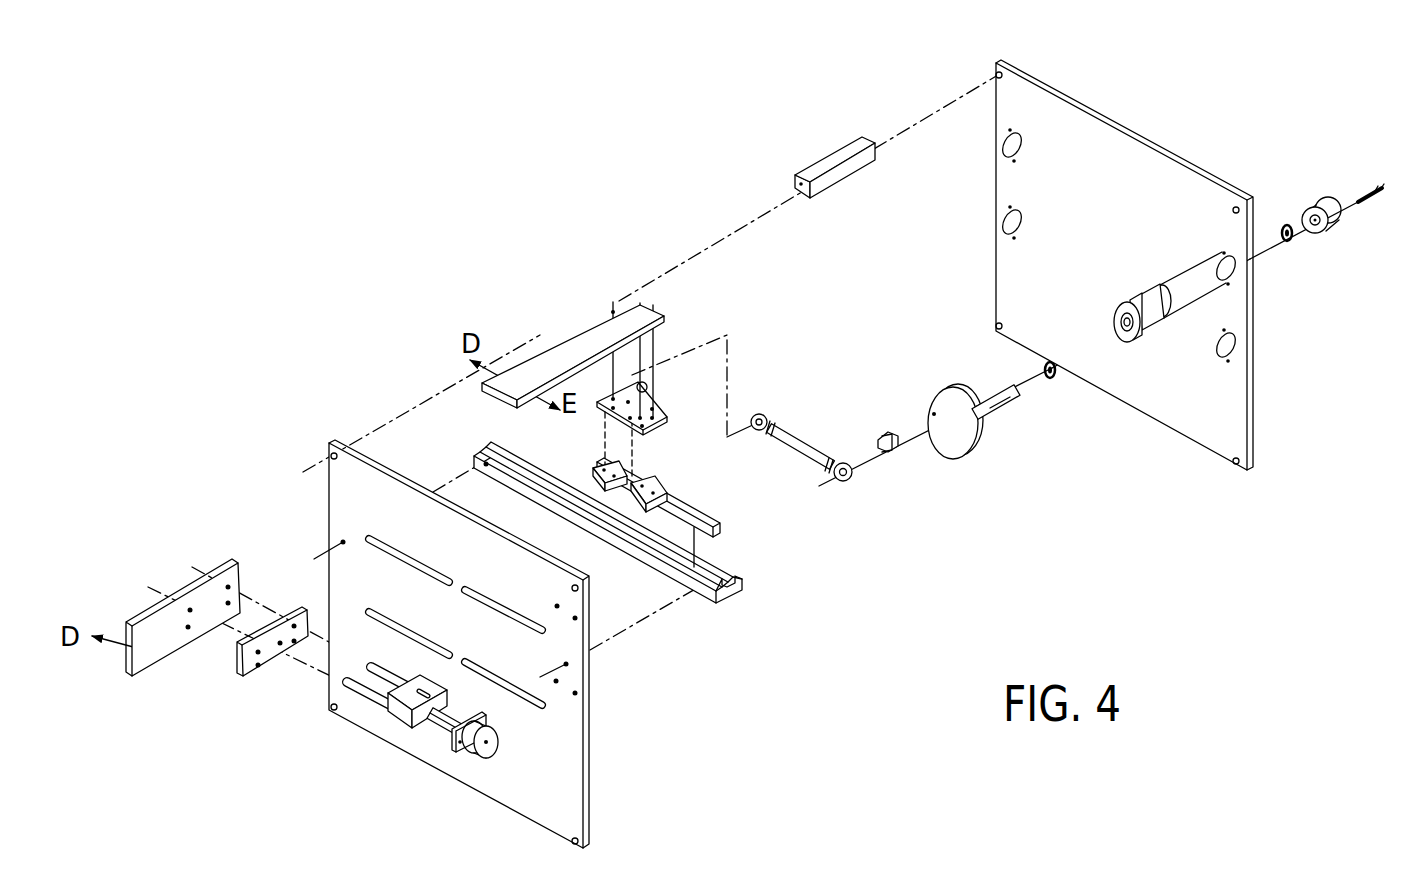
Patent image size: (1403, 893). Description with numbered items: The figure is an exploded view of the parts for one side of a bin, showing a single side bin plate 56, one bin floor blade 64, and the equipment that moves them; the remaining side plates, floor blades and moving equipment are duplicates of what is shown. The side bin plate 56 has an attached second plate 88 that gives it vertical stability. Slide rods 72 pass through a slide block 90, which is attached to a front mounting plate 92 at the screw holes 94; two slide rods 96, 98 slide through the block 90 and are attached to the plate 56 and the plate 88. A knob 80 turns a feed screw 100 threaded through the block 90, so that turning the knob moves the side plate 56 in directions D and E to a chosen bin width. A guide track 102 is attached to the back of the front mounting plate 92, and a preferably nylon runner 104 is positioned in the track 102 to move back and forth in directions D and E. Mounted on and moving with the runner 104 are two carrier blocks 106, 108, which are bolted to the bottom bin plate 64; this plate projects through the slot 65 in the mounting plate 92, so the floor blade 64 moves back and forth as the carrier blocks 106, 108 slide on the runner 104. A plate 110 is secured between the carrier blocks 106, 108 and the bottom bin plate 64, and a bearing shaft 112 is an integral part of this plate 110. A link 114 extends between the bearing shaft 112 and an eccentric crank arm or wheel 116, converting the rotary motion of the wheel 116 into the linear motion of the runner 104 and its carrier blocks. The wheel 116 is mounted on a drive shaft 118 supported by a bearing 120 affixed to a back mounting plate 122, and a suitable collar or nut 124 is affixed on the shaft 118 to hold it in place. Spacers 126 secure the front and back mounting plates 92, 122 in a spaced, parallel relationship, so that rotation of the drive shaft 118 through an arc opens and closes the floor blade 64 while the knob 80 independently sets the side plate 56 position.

The side bin plate 56 is at (186, 594).
The bin floor blade 64 is at (555, 347).
The slot 65 is at (487, 610).
The slide rods 72 is at (372, 710).
The knob 80 is at (490, 749).
The second plate 88 is at (268, 665).
The slide block 90 is at (406, 719).
The front mounting plate 92 is at (578, 790).
The screw holes 94 is at (575, 618).
The slide rod 96 is at (396, 671).
The slide rod 98 is at (348, 688).
The feed screw 100 is at (448, 720).
The guide track 102 is at (742, 590).
The runner 104 is at (708, 519).
The carrier block 106 is at (622, 466).
The carrier block 108 is at (656, 483).
The plate 110 is at (663, 403).
The bearing shaft 112 is at (653, 350).
The link 114 is at (802, 437).
The eccentric crank arm or wheel 116 is at (972, 446).
The drive shaft 118 is at (997, 398).
The bearing 120 is at (1148, 332).
The back mounting plate 122 is at (1235, 408).
The collar or nut 124 is at (1330, 232).
The spacers 126 is at (833, 153).